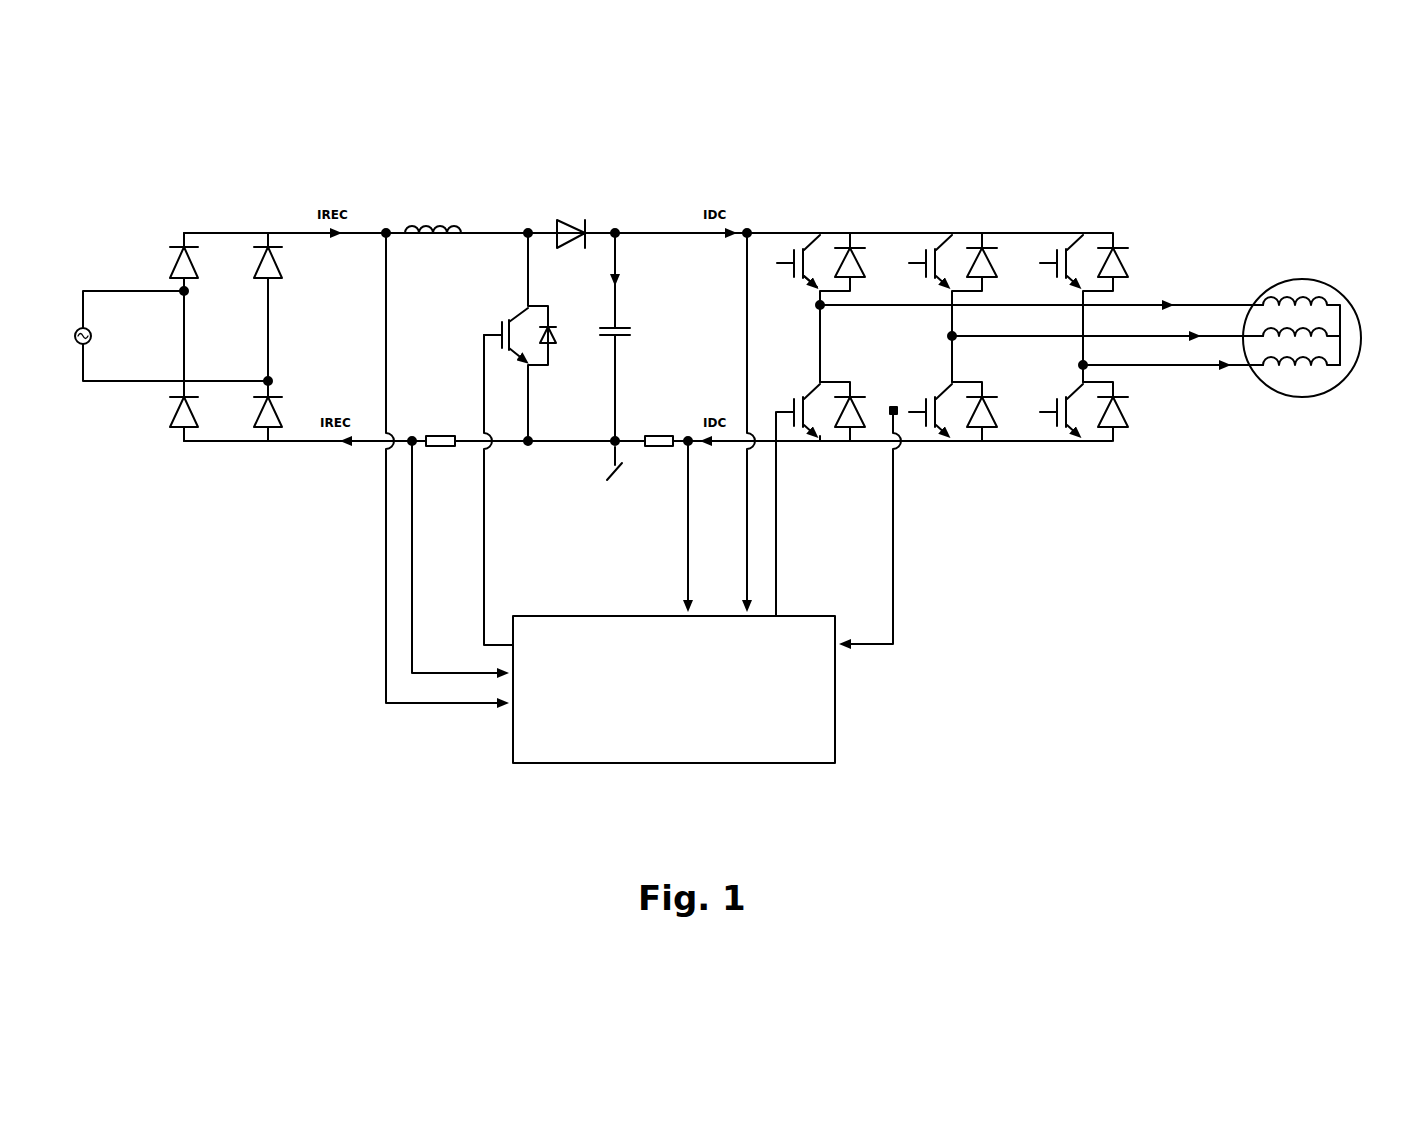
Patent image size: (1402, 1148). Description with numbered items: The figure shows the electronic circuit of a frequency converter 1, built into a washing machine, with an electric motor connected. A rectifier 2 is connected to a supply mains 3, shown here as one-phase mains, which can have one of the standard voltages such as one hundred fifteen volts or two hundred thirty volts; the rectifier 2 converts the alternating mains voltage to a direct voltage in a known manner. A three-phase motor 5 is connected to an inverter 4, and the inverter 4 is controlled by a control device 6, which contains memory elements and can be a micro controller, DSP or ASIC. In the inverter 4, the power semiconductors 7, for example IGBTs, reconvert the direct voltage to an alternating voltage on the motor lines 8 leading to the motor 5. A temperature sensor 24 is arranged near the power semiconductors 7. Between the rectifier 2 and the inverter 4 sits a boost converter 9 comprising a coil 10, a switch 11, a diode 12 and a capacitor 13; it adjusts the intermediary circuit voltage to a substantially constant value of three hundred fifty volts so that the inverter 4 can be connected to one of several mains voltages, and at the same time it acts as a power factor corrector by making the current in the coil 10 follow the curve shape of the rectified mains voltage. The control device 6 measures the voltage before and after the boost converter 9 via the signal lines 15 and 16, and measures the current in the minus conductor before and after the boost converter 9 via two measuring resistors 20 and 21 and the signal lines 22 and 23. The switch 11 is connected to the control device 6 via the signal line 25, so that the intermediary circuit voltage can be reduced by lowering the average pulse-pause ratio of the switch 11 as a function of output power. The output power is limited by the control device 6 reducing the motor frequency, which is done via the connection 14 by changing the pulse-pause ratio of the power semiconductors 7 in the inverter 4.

The frequency converter 1 is at (617, 106).
The rectifier 2 is at (220, 216).
The supply mains 3 is at (81, 276).
The inverter 4 is at (968, 200).
The three-phase motor 5 is at (1290, 282).
The control device 6 is at (674, 689).
The power semiconductors 7 is at (938, 444).
The motor lines 8 is at (1184, 377).
The boost converter 9 is at (495, 196).
The coil 10 is at (405, 228).
The switch 11 is at (512, 318).
The diode 12 is at (586, 229).
The capacitor 13 is at (623, 325).
The connection 14 is at (776, 515).
The signal line 15 is at (385, 515).
The signal line 16 is at (746, 515).
The measuring resistor 20 is at (445, 452).
The measuring resistor 21 is at (659, 452).
The signal line 22 is at (412, 515).
The signal line 23 is at (687, 515).
The temperature sensor 24 is at (892, 404).
The signal line 25 is at (484, 515).